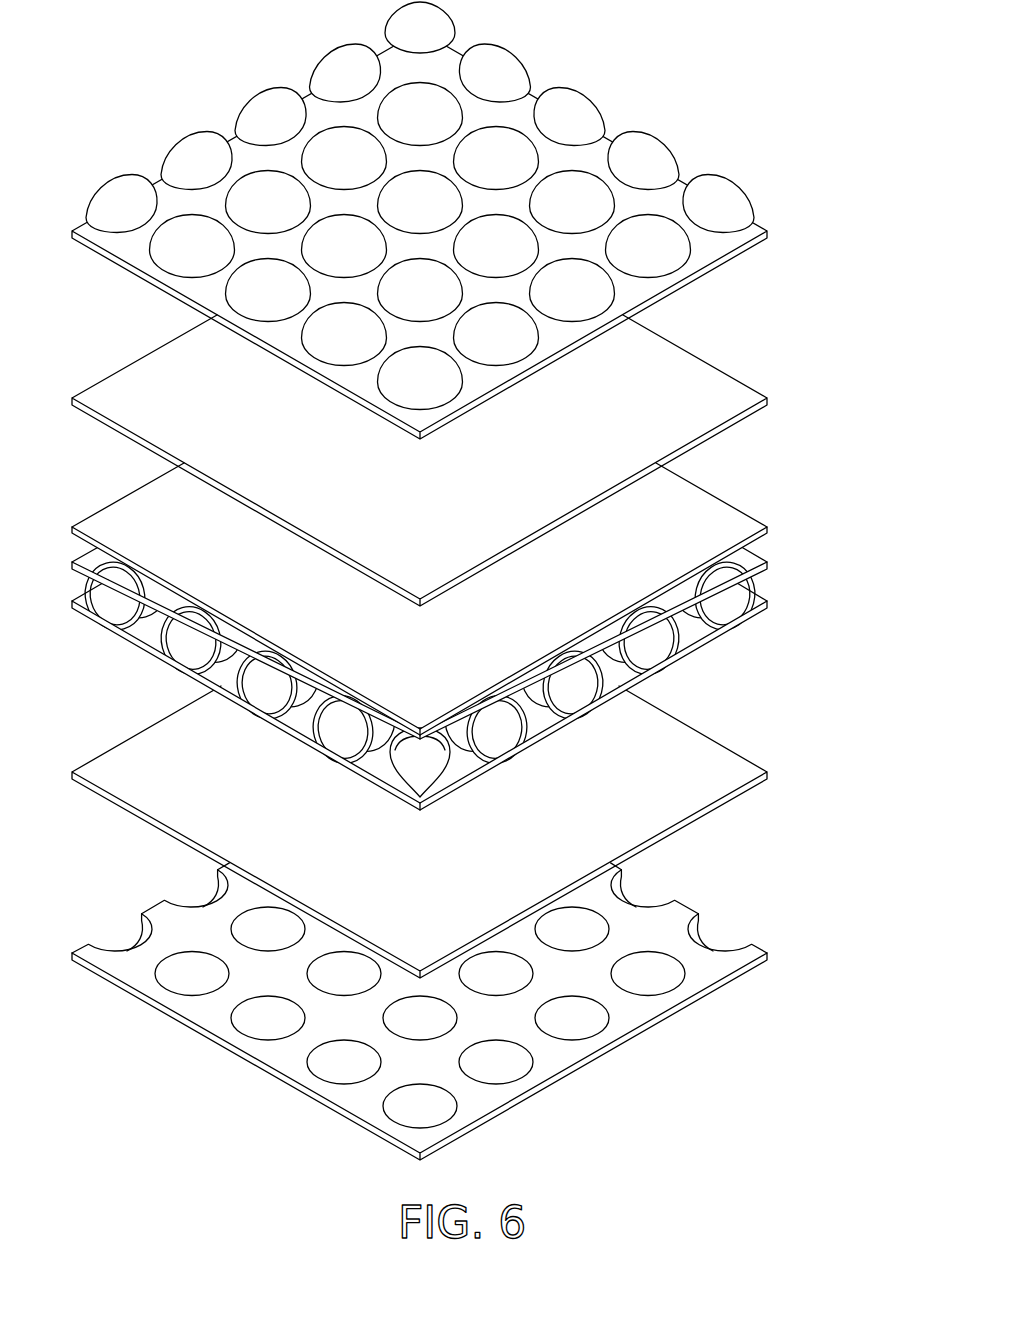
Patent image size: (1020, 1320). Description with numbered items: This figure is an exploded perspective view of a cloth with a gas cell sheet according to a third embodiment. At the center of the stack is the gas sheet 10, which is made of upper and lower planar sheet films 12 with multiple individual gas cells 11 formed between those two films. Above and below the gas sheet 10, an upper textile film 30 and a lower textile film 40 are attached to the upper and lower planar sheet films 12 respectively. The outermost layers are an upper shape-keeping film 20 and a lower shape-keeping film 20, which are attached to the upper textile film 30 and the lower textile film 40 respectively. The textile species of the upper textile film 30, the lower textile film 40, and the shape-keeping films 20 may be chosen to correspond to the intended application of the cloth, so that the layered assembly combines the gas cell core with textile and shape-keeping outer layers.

The gas sheet 10 is at (460, 615).
The individual gas cells 11 is at (757, 558).
The planar sheet films 12 is at (702, 650).
The shape-keeping film 20 is at (663, 157).
The upper textile film 30 is at (722, 370).
The lower textile film 40 is at (738, 800).